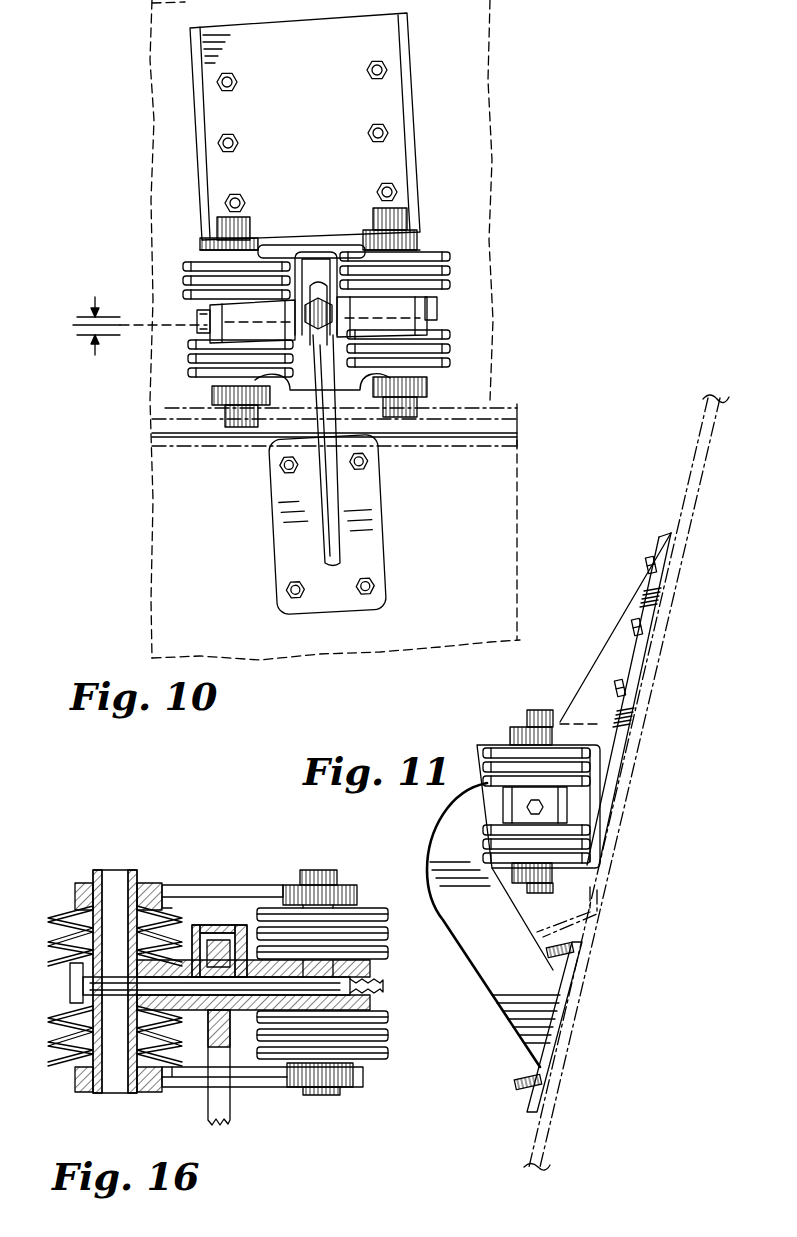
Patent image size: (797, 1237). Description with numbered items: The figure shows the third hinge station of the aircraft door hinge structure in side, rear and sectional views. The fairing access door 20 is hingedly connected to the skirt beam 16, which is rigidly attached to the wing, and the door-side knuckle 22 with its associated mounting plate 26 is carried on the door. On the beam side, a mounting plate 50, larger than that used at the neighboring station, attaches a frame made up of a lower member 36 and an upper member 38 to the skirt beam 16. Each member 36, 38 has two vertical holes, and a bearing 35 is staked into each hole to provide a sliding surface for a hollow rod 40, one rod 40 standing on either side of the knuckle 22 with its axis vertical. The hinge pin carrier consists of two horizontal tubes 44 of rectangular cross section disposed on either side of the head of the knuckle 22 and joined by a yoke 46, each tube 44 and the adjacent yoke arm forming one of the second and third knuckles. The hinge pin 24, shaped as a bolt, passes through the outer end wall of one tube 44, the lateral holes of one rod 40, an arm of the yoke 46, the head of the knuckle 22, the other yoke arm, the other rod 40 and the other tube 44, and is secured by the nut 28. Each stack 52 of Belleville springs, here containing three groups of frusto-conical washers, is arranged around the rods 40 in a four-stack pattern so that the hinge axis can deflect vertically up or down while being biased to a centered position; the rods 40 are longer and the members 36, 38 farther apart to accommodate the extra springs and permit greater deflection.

In FIG. 10, the skirt beam 16 is at (462, 149).
In FIG. 11, the skirt beam 16 is at (683, 556).
In FIG. 10, the access door 20 is at (450, 560).
In FIG. 11, the access door 20 is at (548, 1112).
In FIG. 10, the knuckle 22 is at (325, 374).
In FIG. 11, the knuckle 22 is at (478, 917).
In FIG. 16, the knuckle 22 is at (207, 1040).
In FIG. 10, the hinge pin 24 is at (435, 300).
In FIG. 11, the hinge pin 24 is at (568, 805).
In FIG. 16, the hinge pin 24 is at (250, 960).
In FIG. 10, the mounting plate 26 is at (312, 559).
In FIG. 11, the mounting plate 26 is at (535, 1112).
In FIG. 10, the nut 28 is at (198, 316).
In FIG. 16, the nut 28 is at (372, 976).
In FIG. 10, the bearing 35 is at (425, 252).
In FIG. 16, the bearing 35 is at (150, 883).
In FIG. 10, the lower frame member 36 is at (425, 412).
In FIG. 11, the lower frame member 36 is at (578, 872).
In FIG. 16, the lower frame member 36 is at (353, 1080).
In FIG. 10, the upper frame member 38 is at (422, 236).
In FIG. 11, the upper frame member 38 is at (575, 740).
In FIG. 16, the upper frame member 38 is at (355, 886).
In FIG. 10, the rod 40 is at (247, 222).
In FIG. 11, the rod 40 is at (537, 710).
In FIG. 16, the rod 40 is at (100, 870).
In FIG. 10, the tube 44 is at (437, 325).
In FIG. 11, the tube 44 is at (487, 782).
In FIG. 10, the yoke 46 is at (317, 250).
In FIG. 16, the yoke 46 is at (205, 925).
In FIG. 10, the mounting plate 50 is at (312, 82).
In FIG. 11, the mounting plate 50 is at (658, 606).
In FIG. 10, the stack of Belleville springs 52 is at (190, 264).
In FIG. 11, the stack of Belleville springs 52 is at (592, 770).
In FIG. 16, the stack of Belleville springs 52 is at (390, 1035).